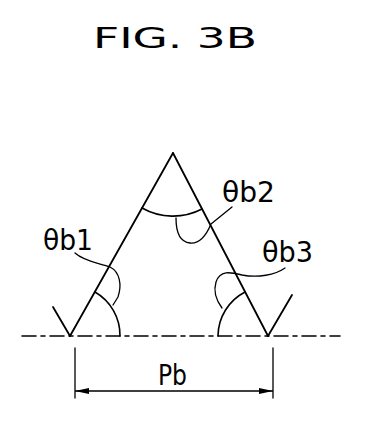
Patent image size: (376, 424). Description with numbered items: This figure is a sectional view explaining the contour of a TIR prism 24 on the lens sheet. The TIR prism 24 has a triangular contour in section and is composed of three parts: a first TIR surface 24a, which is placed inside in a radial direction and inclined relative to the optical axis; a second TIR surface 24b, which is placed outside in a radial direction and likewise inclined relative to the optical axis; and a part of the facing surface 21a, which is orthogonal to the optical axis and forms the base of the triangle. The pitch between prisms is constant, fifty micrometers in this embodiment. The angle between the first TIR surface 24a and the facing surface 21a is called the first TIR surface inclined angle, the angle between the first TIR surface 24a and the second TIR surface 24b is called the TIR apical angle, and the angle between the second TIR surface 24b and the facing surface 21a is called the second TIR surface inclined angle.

The TIR prism 24 is at (194, 230).
The first TIR surface 24a is at (138, 217).
The second TIR surface 24b is at (218, 237).
The facing surface 21a is at (287, 337).